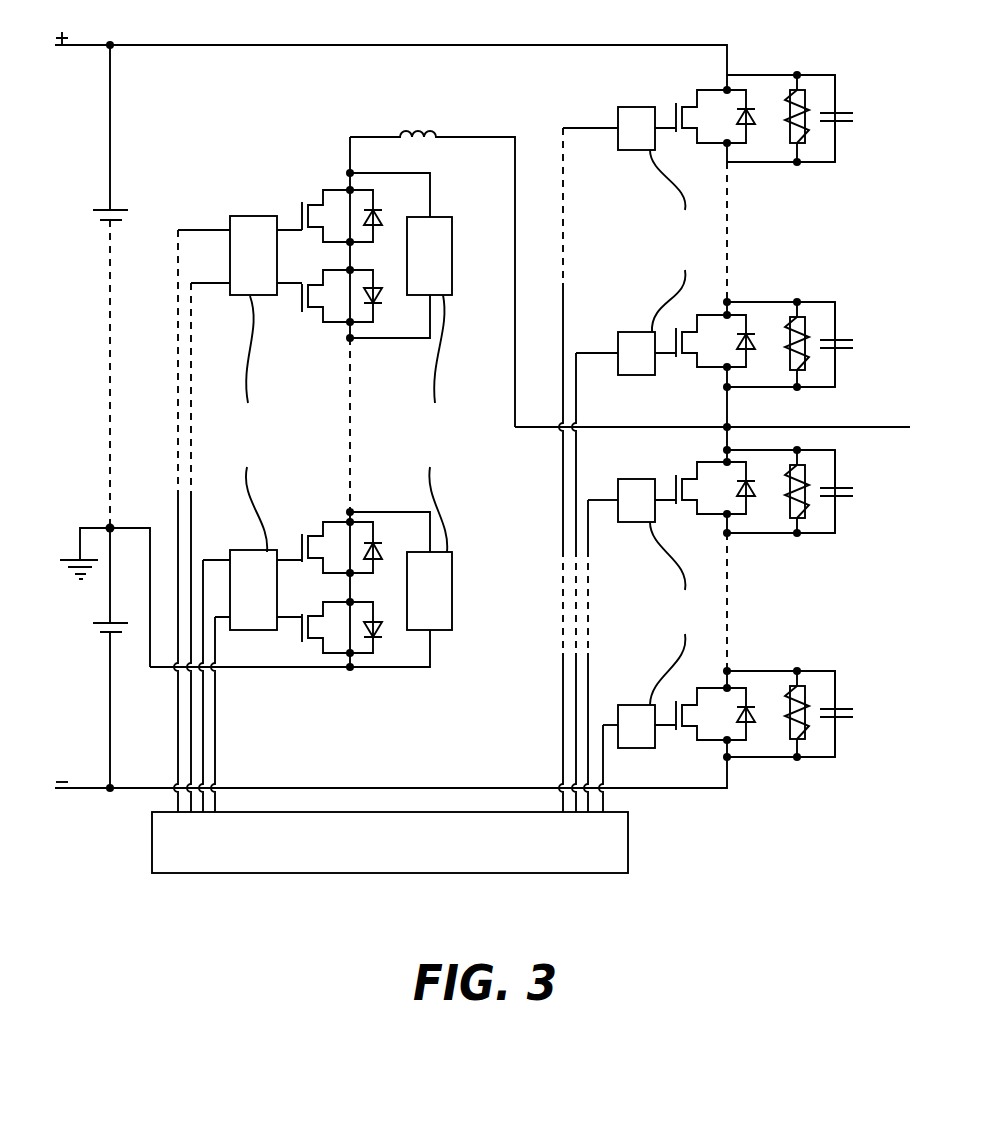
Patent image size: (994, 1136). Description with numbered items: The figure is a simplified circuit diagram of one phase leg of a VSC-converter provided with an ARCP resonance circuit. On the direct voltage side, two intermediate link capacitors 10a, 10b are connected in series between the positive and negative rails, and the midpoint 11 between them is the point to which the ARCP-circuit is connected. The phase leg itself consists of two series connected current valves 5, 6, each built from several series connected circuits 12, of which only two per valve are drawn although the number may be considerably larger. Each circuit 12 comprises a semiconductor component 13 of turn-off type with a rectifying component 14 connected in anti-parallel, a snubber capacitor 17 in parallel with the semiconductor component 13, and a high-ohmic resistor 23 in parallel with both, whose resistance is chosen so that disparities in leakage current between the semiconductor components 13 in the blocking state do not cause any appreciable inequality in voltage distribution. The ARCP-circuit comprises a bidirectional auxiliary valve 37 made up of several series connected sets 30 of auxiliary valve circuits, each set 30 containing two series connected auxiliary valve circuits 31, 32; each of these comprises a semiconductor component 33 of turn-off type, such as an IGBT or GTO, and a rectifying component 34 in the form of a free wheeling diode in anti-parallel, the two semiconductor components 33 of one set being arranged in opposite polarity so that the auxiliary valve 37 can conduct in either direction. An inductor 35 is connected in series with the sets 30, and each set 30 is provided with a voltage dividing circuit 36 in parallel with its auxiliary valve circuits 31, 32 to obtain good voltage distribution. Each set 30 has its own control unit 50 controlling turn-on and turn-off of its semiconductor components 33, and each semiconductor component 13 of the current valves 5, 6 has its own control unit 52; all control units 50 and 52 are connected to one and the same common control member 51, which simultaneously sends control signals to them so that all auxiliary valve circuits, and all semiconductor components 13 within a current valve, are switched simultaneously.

The current valve 5 is at (830, 241).
The current valve 6 is at (830, 601).
The intermediate link capacitor 10a is at (100, 221).
The intermediate link capacitor 10b is at (100, 630).
The midpoint 11 is at (118, 525).
The series connected circuit 12 is at (744, 61).
The semiconductor component of turn-off type 13 is at (675, 107).
The rectifying component 14 is at (752, 128).
The snubber capacitor 17 is at (842, 108).
The high-ohmic resistor 23 is at (802, 103).
The set of auxiliary valve circuits 30 is at (305, 187).
The auxiliary valve circuit 31 is at (382, 197).
The auxiliary valve circuit 32 is at (378, 329).
The semiconductor component of turn-off type 33 is at (302, 205).
The rectifying component 34 is at (380, 210).
The inductor 35 is at (423, 137).
The voltage dividing circuit 36 is at (452, 225).
The auxiliary valve 37 is at (432, 377).
The control unit 50 is at (238, 296).
The common control member 51 is at (212, 874).
The control unit 52 is at (638, 150).